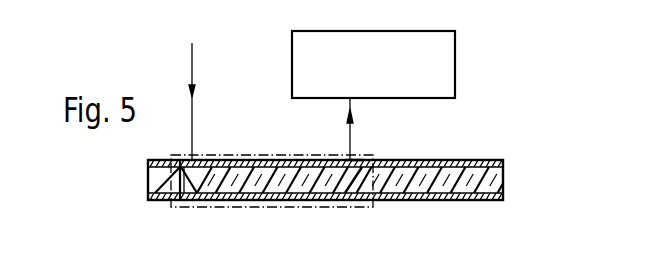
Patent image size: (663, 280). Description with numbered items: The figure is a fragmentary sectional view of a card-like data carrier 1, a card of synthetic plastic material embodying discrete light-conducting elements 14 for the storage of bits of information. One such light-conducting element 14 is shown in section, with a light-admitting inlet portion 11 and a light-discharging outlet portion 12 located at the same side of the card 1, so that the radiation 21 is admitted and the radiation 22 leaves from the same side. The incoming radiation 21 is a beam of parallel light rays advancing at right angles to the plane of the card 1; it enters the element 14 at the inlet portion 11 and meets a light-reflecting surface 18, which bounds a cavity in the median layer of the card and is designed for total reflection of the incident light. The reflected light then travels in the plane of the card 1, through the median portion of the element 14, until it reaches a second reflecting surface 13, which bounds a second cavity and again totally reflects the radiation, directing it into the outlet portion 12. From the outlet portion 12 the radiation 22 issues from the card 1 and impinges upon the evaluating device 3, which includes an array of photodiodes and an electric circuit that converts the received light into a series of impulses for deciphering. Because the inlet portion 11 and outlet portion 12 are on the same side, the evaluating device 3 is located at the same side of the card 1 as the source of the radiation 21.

The card-like data carrier 1 is at (484, 157).
The evaluating device 3 is at (456, 66).
The light-admitting inlet portion 11 is at (195, 160).
The light-discharging outlet portion 12 is at (353, 161).
The second reflecting surface 13 is at (355, 160).
The light-conducting element 14 is at (257, 208).
The light-reflecting surface 18 is at (192, 201).
The radiation 21 is at (190, 68).
The radiation 22 is at (349, 130).